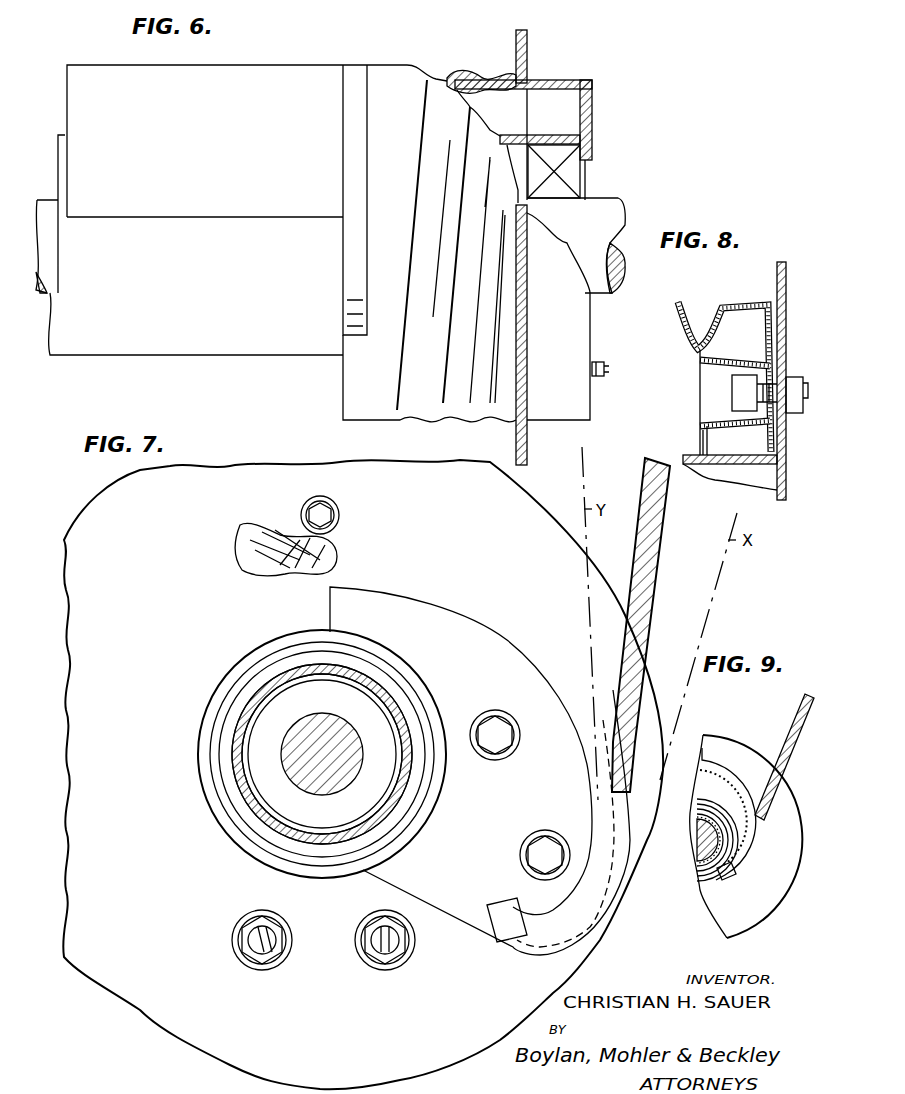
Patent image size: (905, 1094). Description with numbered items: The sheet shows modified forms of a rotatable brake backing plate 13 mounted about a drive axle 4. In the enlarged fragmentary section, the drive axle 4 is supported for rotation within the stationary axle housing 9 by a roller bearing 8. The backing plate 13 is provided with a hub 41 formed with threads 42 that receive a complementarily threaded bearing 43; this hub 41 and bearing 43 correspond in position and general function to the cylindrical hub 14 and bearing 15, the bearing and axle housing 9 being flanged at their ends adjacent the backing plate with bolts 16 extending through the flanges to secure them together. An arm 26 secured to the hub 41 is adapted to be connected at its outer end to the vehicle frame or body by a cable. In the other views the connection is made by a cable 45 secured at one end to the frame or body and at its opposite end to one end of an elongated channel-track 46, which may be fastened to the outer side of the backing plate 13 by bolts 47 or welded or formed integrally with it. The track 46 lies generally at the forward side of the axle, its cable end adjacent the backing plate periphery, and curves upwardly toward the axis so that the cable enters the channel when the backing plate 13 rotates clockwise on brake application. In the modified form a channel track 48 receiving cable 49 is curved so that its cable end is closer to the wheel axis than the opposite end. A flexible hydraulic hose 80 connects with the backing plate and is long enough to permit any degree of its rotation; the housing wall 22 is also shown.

In FIG. 6, the drive axle 4 is at (605, 203).
In FIG. 7, the drive axle 4 is at (338, 730).
In FIG. 9, the drive axle 4 is at (694, 852).
In FIG. 7, the roller bearing 8 is at (431, 779).
In FIG. 6, the axle housing 9 is at (248, 355).
In FIG. 7, the axle housing 9 is at (232, 746).
In FIG. 9, the axle housing 9 is at (697, 823).
In FIG. 6, the backing plate 13 is at (528, 40).
In FIG. 8, the backing plate 13 is at (787, 292).
In FIG. 7, the backing plate 13 is at (540, 516).
In FIG. 9, the backing plate 13 is at (784, 890).
In FIG. 8, the cylindrical hub 14 is at (786, 466).
In FIG. 7, the cylindrical hub 14 is at (408, 684).
In FIG. 7, the bearing 15 is at (425, 705).
In FIG. 9, the bearing 15 is at (697, 803).
In FIG. 6, the bolts 16 is at (606, 372).
In FIG. 6, the housing 22 is at (243, 74).
In FIG. 7, the housing 22 is at (262, 655).
In FIG. 9, the housing 22 is at (709, 808).
In FIG. 6, the arm 26 is at (362, 232).
In FIG. 6, the hub 41 is at (404, 60).
In FIG. 6, the threads 42 is at (472, 71).
In FIG. 6, the threaded bearing 43 is at (523, 141).
In FIG. 7, the cable 45 is at (663, 544).
In FIG. 8, the channel-track 46 is at (683, 336).
In FIG. 7, the channel-track 46 is at (526, 653).
In FIG. 8, the bolts 47 is at (732, 405).
In FIG. 7, the bolts 47 is at (484, 722).
In FIG. 9, the channel track 48 is at (750, 842).
In FIG. 9, the cable 49 is at (784, 753).
In FIG. 7, the flexible hydraulic hose 80 is at (246, 566).